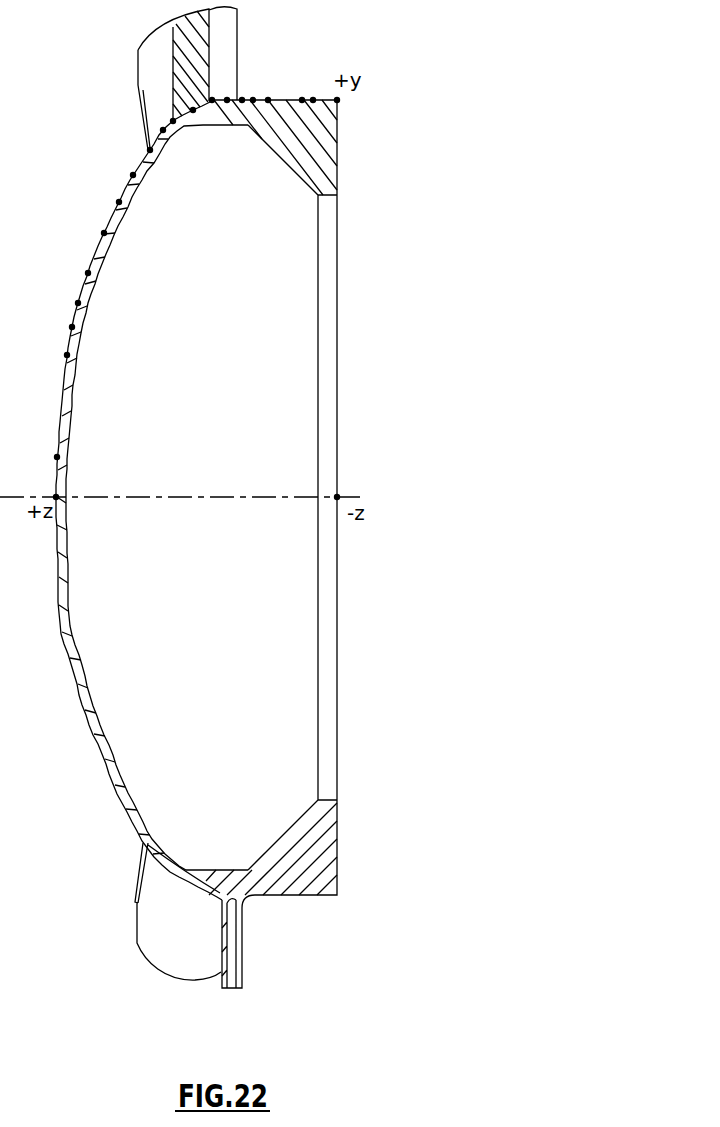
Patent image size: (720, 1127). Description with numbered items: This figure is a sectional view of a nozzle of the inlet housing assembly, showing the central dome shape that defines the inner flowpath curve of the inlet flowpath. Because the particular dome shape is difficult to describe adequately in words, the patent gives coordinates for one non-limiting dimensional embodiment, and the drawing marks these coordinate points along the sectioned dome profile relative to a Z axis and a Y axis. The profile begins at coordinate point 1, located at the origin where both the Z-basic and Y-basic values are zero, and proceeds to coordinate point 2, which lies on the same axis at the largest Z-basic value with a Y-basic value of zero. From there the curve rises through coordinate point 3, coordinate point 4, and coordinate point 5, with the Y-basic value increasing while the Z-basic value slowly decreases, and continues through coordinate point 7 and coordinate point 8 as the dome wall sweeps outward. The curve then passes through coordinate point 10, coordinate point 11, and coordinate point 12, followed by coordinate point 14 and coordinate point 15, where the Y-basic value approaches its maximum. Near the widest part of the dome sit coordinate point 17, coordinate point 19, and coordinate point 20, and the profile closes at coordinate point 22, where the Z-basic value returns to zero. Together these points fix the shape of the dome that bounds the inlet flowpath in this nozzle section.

The coordinate point 1 is at (337, 497).
The coordinate point 2 is at (56, 497).
The coordinate point 3 is at (57, 457).
The coordinate point 4 is at (67, 355).
The coordinate point 5 is at (72, 327).
The coordinate point 7 is at (88, 273).
The coordinate point 8 is at (104, 233).
The coordinate point 10 is at (133, 175).
The coordinate point 11 is at (150, 150).
The coordinate point 12 is at (163, 130).
The coordinate point 14 is at (193, 110).
The coordinate point 15 is at (213, 100).
The coordinate point 17 is at (243, 100).
The coordinate point 19 is at (268, 100).
The coordinate point 20 is at (302, 100).
The coordinate point 22 is at (337, 100).